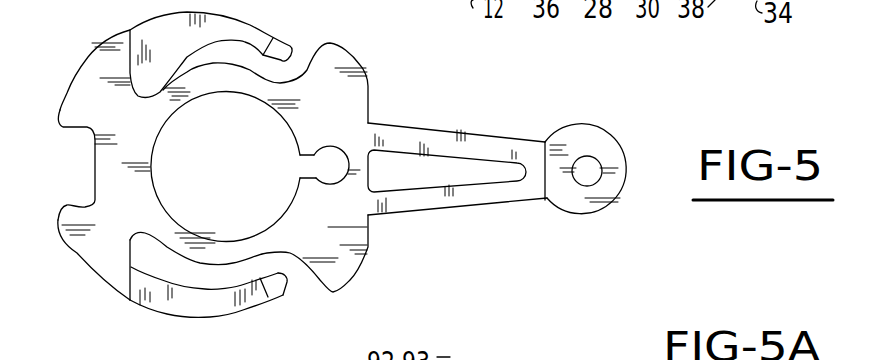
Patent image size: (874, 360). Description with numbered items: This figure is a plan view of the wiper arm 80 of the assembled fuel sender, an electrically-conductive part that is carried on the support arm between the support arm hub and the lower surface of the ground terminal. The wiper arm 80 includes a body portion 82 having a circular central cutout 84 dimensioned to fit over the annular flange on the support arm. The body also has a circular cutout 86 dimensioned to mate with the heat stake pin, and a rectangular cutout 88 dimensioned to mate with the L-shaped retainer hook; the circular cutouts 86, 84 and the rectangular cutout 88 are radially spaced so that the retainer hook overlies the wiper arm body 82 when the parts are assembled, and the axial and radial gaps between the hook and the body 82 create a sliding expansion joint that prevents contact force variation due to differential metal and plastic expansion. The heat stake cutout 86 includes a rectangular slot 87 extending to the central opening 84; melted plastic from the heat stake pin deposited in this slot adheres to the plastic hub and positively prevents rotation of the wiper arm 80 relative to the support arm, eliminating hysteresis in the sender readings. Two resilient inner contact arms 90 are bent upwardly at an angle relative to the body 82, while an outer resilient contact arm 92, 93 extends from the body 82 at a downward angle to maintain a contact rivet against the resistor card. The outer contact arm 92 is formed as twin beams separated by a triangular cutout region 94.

The wiper arm 80 is at (317, 59).
The body portion 82 is at (83, 90).
The circular central cutout 84 is at (128, 240).
The circular cutout 86 is at (328, 172).
The rectangular slot 87 is at (300, 170).
The rectangular cutout 88 is at (93, 158).
The resilient inner contact arms 90 is at (206, 306).
The outer resilient contact arm 92 is at (478, 145).
The outer resilient contact arm 93 is at (487, 198).
The triangular cutout region 94 is at (407, 173).